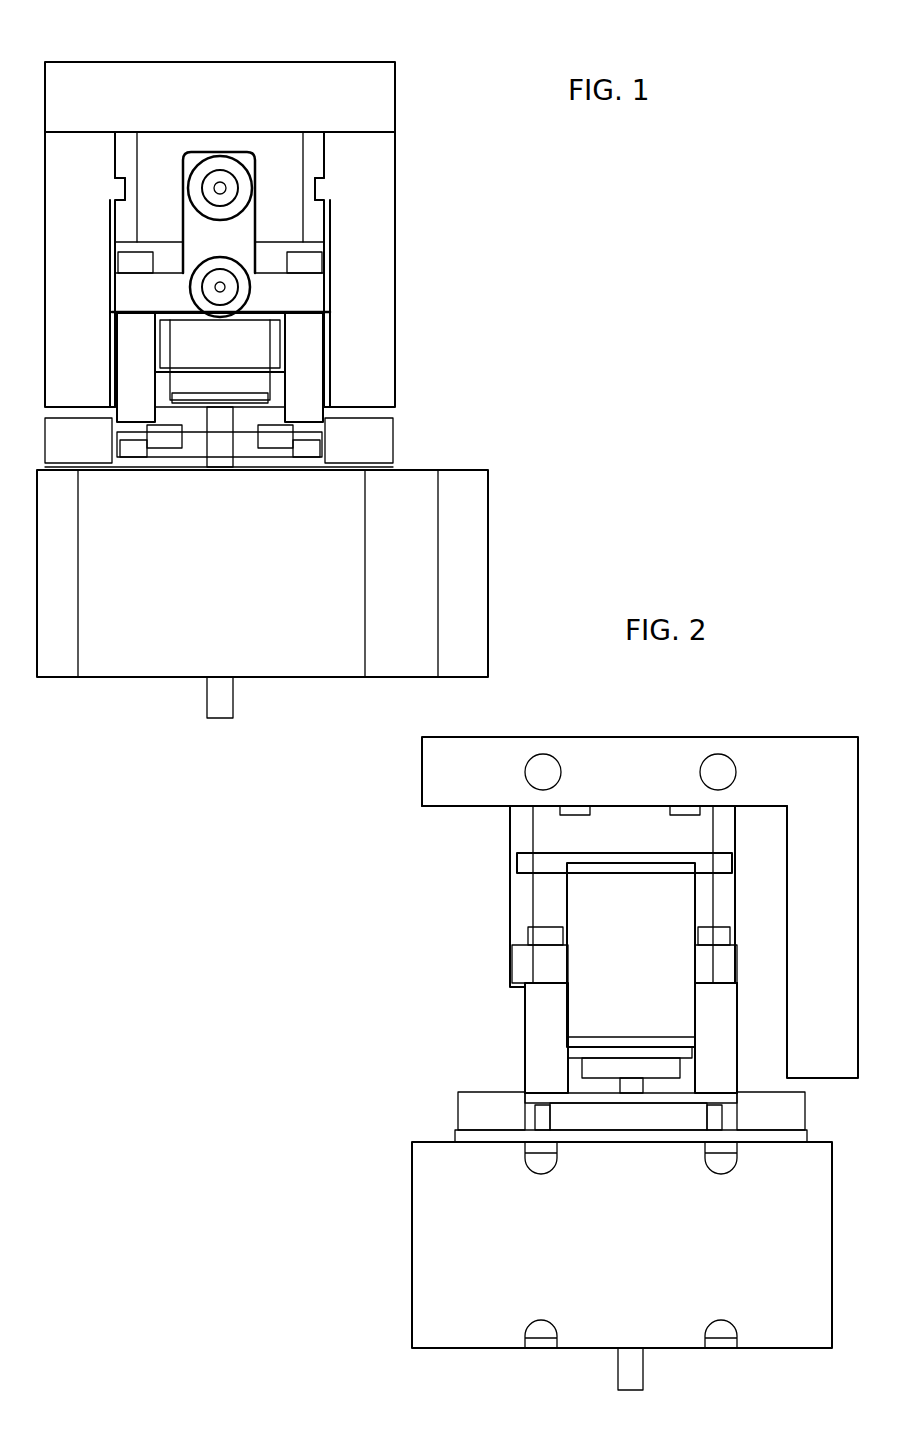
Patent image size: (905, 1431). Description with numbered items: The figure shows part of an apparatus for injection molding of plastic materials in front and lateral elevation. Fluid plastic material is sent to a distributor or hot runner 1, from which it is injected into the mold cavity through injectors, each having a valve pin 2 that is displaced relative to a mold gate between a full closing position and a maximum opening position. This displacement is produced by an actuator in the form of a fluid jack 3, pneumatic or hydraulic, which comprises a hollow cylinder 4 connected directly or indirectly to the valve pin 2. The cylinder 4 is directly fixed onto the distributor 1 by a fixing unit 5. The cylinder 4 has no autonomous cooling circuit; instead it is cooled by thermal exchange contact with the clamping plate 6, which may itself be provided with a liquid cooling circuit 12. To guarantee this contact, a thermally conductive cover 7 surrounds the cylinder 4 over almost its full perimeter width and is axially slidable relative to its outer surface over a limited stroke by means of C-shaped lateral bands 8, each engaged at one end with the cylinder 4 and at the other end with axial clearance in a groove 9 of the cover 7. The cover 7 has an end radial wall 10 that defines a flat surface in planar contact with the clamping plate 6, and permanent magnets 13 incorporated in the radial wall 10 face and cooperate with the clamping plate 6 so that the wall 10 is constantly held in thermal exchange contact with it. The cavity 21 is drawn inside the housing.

In FIG. 1, the distributor 1 is at (118, 668).
In FIG. 2, the distributor 1 is at (448, 1330).
In FIG. 1, the valve pin 2 is at (220, 713).
In FIG. 2, the valve pin 2 is at (628, 1375).
In FIG. 1, the fluid jack 3 is at (146, 340).
In FIG. 2, the fluid jack 3 is at (574, 1073).
In FIG. 1, the hollow cylinder 4 is at (213, 232).
In FIG. 2, the hollow cylinder 4 is at (714, 918).
In FIG. 1, the fixing unit 5 is at (326, 444).
In FIG. 2, the fixing unit 5 is at (657, 1117).
In FIG. 1, the clamping plate 6 is at (96, 58).
In FIG. 2, the clamping plate 6 is at (782, 733).
In FIG. 1, the cover 7 is at (332, 157).
In FIG. 2, the cover 7 is at (506, 820).
In FIG. 1, the C-shaped lateral band 8 is at (112, 272).
In FIG. 2, the C-shaped lateral band 8 is at (590, 990).
In FIG. 1, the groove 9 is at (113, 190).
In FIG. 2, the groove 9 is at (535, 865).
In FIG. 1, the end radial wall 10 is at (174, 130).
In FIG. 2, the end radial wall 10 is at (510, 804).
In FIG. 2, the liquid cooling circuit 12 is at (550, 770).
In FIG. 2, the magnets 13 is at (688, 812).
In FIG. 1, the cavity 21 is at (275, 132).
In FIG. 2, the cavity 21 is at (630, 806).